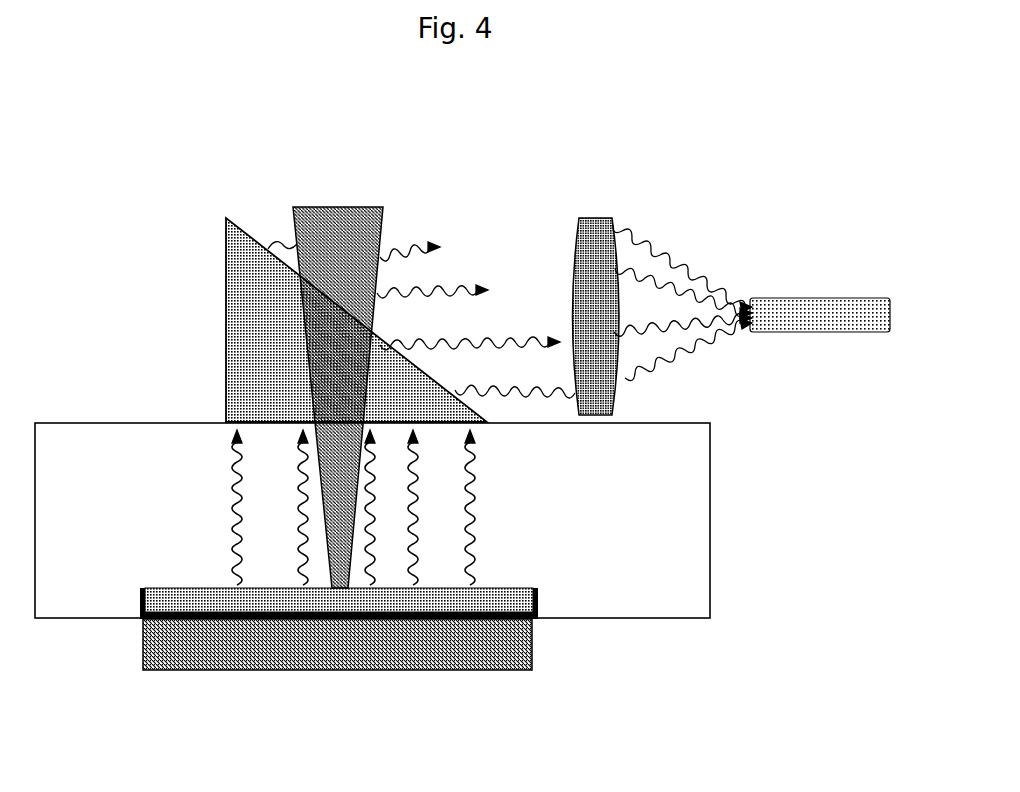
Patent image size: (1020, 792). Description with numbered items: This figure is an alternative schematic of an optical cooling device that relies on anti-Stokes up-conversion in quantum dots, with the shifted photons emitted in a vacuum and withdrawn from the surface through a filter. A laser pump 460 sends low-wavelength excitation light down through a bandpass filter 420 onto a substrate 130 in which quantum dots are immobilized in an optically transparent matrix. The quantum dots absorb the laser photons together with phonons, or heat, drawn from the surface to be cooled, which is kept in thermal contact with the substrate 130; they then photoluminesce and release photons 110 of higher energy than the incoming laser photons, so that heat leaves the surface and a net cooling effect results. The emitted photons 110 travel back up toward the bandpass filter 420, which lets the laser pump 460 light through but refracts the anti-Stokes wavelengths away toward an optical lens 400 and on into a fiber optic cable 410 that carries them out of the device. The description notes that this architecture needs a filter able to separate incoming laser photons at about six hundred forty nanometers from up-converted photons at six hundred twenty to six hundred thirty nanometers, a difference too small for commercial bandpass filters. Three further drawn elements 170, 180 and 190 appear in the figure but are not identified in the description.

The photons 110 is at (482, 498).
The quantum dot substrate 130 is at (216, 585).
The substrate 170 is at (362, 677).
The housing 180 is at (607, 627).
The electrode 190 is at (140, 612).
The optical lens 400 is at (605, 217).
The fiber optic cable 410 is at (777, 335).
The bandpass filter 420 is at (226, 326).
The laser pump 460 is at (355, 198).